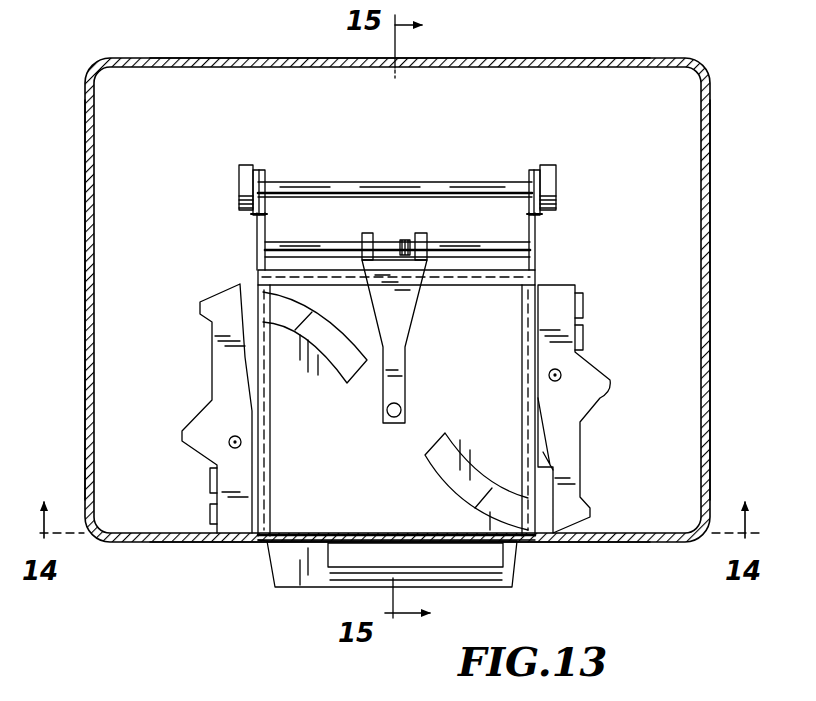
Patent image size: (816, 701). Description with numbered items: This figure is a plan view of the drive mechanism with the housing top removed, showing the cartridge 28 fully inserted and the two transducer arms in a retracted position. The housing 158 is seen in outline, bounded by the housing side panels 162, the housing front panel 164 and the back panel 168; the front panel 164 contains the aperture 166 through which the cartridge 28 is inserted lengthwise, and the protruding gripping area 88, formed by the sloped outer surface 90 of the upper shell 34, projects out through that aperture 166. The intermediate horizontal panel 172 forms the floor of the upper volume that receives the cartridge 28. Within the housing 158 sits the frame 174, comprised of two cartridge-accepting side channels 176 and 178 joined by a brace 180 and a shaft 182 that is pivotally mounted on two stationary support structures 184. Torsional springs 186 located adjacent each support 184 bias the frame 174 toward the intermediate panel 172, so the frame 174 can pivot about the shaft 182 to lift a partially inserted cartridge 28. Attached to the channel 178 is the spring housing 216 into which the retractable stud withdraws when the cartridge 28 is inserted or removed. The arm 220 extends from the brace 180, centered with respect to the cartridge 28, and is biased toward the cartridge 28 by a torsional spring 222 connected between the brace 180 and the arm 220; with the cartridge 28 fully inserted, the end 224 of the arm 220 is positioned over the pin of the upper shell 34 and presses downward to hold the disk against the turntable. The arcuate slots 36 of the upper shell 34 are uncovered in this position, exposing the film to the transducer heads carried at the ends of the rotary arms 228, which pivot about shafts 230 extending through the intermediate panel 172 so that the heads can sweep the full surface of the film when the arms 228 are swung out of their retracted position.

The housing 158 is at (598, 57).
The housing side panels 162 is at (85, 118).
The housing front panel 164 is at (653, 543).
The aperture 166 is at (259, 548).
The back panel 168 is at (521, 58).
The intermediate horizontal panel 172 is at (176, 226).
The frame 174 is at (537, 234).
The cartridge-accepting side channel 176 is at (268, 443).
The cartridge-accepting side channel 178 is at (521, 392).
The brace 180 is at (308, 243).
The shaft 182 is at (447, 181).
The stationary support structures 184 is at (245, 165).
The torsional springs 186 is at (262, 172).
The spring housing 216 is at (546, 456).
The arm 220 is at (409, 339).
The torsional spring 222 is at (406, 240).
The end of the arm 224 is at (394, 426).
The rotary arms 228 is at (222, 357).
The shafts 230 is at (232, 436).
The upper shell 34 is at (505, 306).
The arcuate slots 36 is at (327, 358).
The cartridge 28 is at (285, 590).
The protruding gripping area 88 is at (515, 573).
The sloped outer surface 90 is at (497, 583).